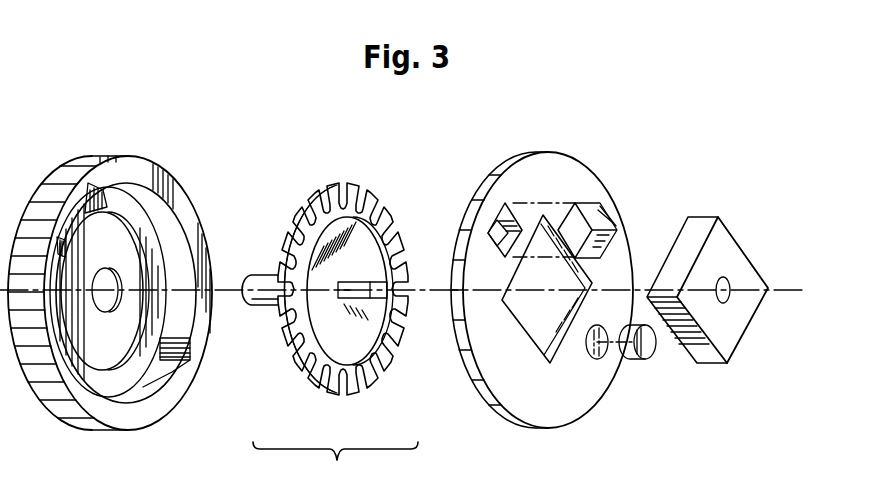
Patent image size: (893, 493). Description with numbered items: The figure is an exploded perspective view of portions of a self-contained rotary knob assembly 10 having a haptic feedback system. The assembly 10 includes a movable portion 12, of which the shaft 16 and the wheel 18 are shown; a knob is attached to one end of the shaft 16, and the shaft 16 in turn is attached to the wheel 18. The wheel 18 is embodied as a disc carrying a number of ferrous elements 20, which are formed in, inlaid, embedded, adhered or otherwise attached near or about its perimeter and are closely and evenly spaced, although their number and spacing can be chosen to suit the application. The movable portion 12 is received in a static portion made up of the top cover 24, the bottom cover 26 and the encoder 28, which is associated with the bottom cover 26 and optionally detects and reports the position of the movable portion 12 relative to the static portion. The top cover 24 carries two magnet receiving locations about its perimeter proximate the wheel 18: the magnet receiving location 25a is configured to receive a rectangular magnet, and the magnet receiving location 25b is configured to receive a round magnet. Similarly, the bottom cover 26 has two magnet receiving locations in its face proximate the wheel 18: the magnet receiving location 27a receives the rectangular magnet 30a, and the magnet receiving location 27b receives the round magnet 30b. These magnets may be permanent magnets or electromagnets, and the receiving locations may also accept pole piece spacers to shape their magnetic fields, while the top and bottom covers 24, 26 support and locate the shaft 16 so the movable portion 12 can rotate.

The self-contained rotary knob assembly 10 is at (705, 97).
The movable portion 12 is at (335, 467).
The shaft 16 is at (267, 278).
The wheel 18 is at (345, 183).
The ferrous elements 20 is at (313, 380).
The top cover 24 is at (62, 152).
The magnet receiving location 25a is at (103, 212).
The magnet receiving location 25b is at (185, 357).
The bottom cover 26 is at (603, 168).
The magnet receiving location 27a is at (517, 222).
The magnet receiving location 27b is at (597, 360).
The encoder 28 is at (723, 250).
The rectangular magnet 30a is at (607, 218).
The round magnet 30b is at (645, 360).